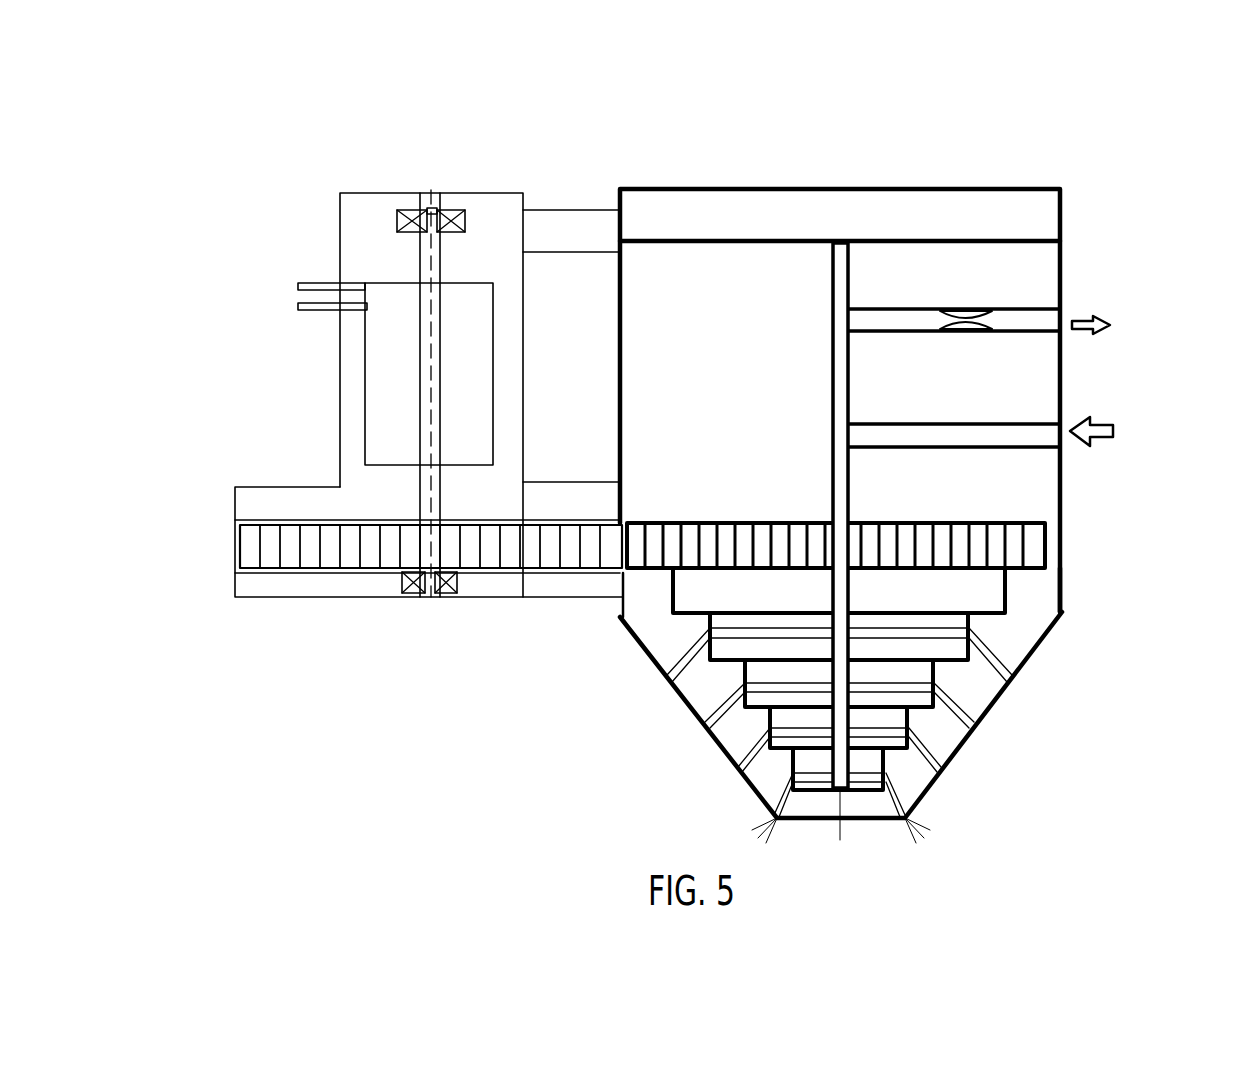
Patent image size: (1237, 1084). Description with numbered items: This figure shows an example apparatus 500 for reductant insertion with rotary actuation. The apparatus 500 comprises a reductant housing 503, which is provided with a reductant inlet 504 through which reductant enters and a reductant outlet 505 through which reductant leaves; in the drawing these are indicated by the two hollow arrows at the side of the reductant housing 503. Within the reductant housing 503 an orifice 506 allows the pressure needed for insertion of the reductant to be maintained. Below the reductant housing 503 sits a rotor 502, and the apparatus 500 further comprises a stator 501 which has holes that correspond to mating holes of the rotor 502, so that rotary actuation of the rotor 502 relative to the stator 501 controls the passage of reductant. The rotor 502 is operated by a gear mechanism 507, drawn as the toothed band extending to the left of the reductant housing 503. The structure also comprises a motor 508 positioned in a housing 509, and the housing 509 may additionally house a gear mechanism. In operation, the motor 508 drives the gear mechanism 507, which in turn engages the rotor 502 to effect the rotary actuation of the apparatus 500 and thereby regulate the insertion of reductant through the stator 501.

The apparatus 500 is at (1138, 132).
The stator 501 is at (1022, 698).
The rotor 502 is at (1057, 557).
The reductant housing 503 is at (1086, 496).
The reductant inlet 504 is at (1130, 426).
The reductant outlet 505 is at (1123, 323).
The orifice 506 is at (970, 295).
The gear mechanism 507 is at (240, 550).
The motor 508 is at (325, 212).
The housing 509 is at (272, 583).